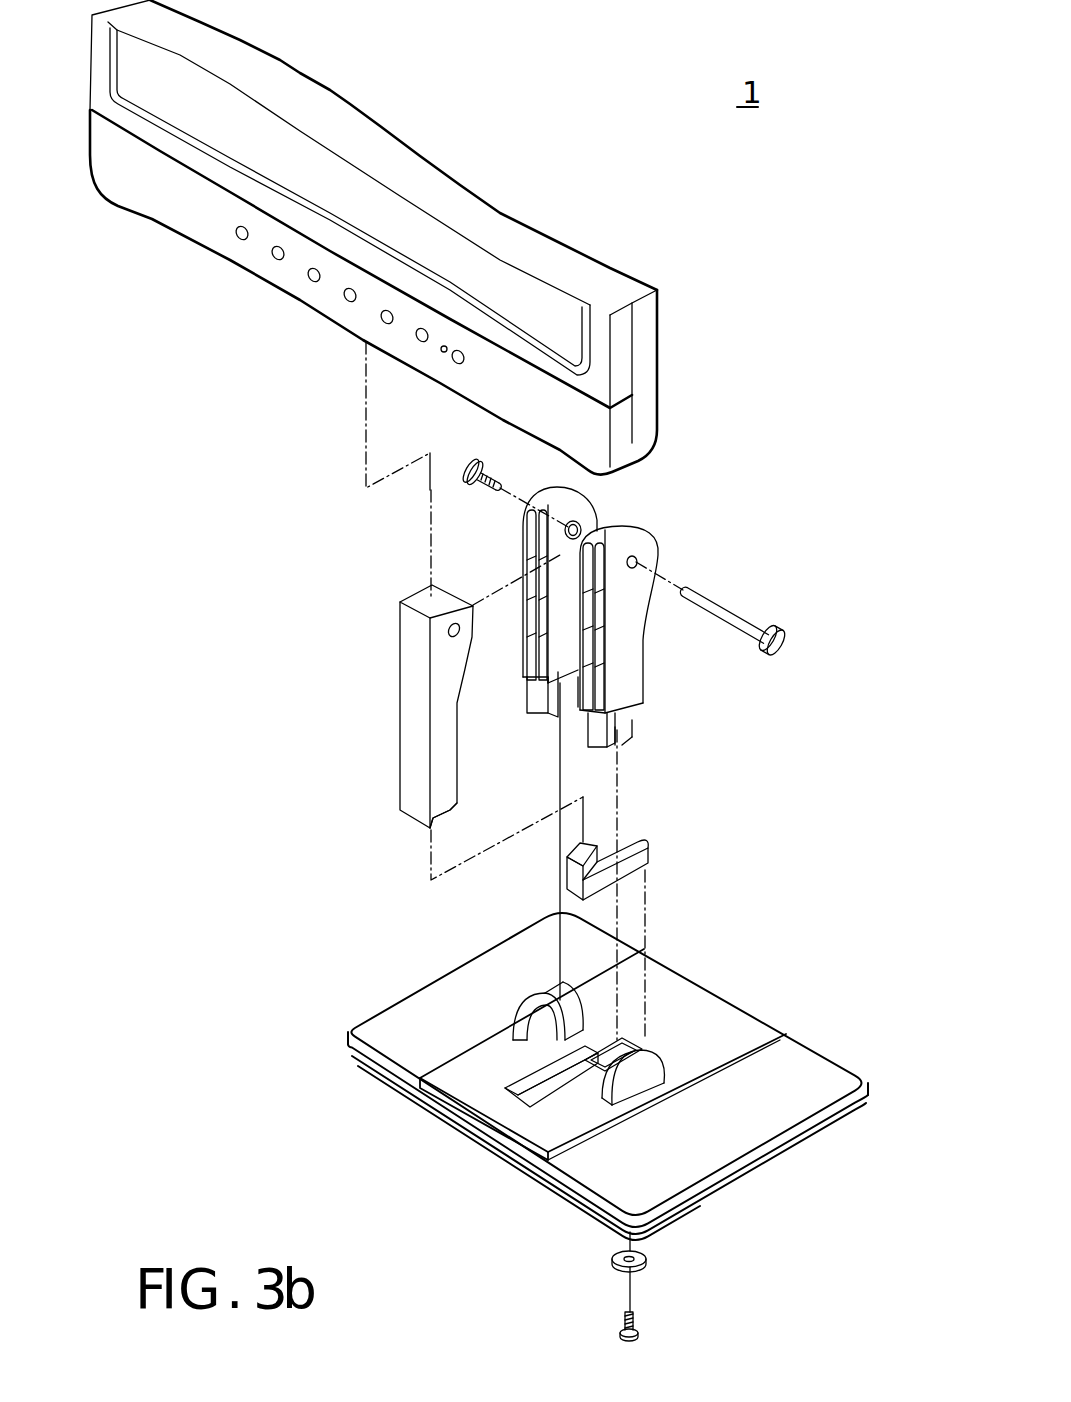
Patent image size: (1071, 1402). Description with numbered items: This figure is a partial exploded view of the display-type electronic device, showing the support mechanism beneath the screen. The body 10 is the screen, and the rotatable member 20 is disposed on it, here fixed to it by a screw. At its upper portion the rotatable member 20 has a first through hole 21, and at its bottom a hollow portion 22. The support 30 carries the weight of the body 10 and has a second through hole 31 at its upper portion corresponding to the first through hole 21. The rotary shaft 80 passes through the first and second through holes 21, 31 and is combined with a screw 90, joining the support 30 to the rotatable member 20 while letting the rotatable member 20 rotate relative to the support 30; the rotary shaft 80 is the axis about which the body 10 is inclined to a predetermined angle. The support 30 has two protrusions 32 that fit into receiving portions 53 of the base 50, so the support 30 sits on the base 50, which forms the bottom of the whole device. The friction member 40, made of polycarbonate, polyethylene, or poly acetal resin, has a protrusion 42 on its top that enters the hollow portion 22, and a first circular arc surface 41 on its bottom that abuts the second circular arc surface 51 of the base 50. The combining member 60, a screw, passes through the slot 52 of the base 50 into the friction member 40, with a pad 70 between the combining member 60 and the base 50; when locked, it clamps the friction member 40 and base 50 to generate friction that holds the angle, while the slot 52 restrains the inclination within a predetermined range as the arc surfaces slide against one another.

The body 10 is at (650, 368).
The rotatable member 20 is at (398, 697).
The first through hole 21 is at (459, 634).
The hollow portion 22 is at (453, 812).
The support 30 is at (646, 662).
The second through hole 31 is at (637, 563).
The protrusions 32 is at (637, 747).
The friction member 40 is at (609, 846).
The first circular arc surface 41 is at (645, 879).
The protrusion 42 is at (567, 854).
The base 50 is at (624, 1076).
The second circular arc surface 51 is at (525, 1100).
The slot 52 is at (645, 1020).
The receiving portions 53 is at (547, 1017).
The combining member 60 is at (638, 1318).
The pad 70 is at (650, 1262).
The rotary shaft 80 is at (718, 612).
The screw 90 is at (462, 468).